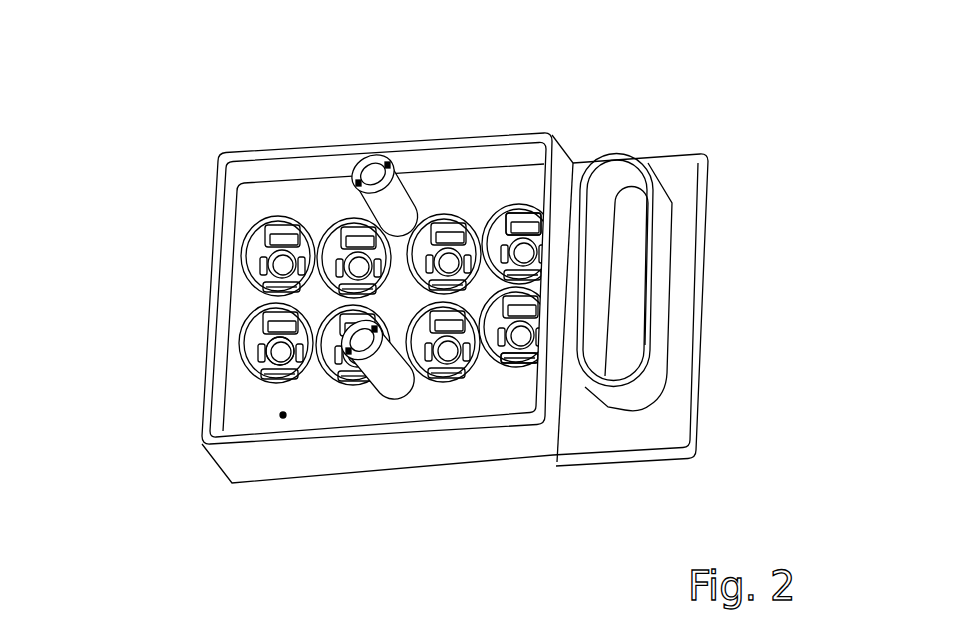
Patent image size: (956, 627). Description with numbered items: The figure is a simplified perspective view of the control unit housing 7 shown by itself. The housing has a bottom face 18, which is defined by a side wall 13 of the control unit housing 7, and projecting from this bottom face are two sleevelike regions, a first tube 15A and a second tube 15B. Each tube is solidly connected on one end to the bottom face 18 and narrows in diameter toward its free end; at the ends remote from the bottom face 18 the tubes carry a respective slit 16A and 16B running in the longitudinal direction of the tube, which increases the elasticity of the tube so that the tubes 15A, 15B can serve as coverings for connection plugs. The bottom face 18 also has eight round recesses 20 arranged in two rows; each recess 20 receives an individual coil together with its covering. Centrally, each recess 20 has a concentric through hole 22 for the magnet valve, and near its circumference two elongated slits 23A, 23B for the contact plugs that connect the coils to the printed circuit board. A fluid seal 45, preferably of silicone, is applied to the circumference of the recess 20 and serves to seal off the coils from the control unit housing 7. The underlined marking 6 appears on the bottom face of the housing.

The control unit housing 7 is at (200, 154).
The first seal 45 is at (262, 226).
The slit 16A is at (358, 173).
The first tube 15A is at (412, 196).
The round recess 20 is at (500, 196).
The elongated slit 23A is at (522, 226).
The concentric through hole 22 is at (278, 351).
The bottom face 18 is at (280, 415).
The side wall 13 is at (283, 437).
The slit 16B is at (375, 340).
The second tube 15B is at (420, 392).
The elongated slit 23B is at (515, 280).
The module panel 6 is at (498, 405).